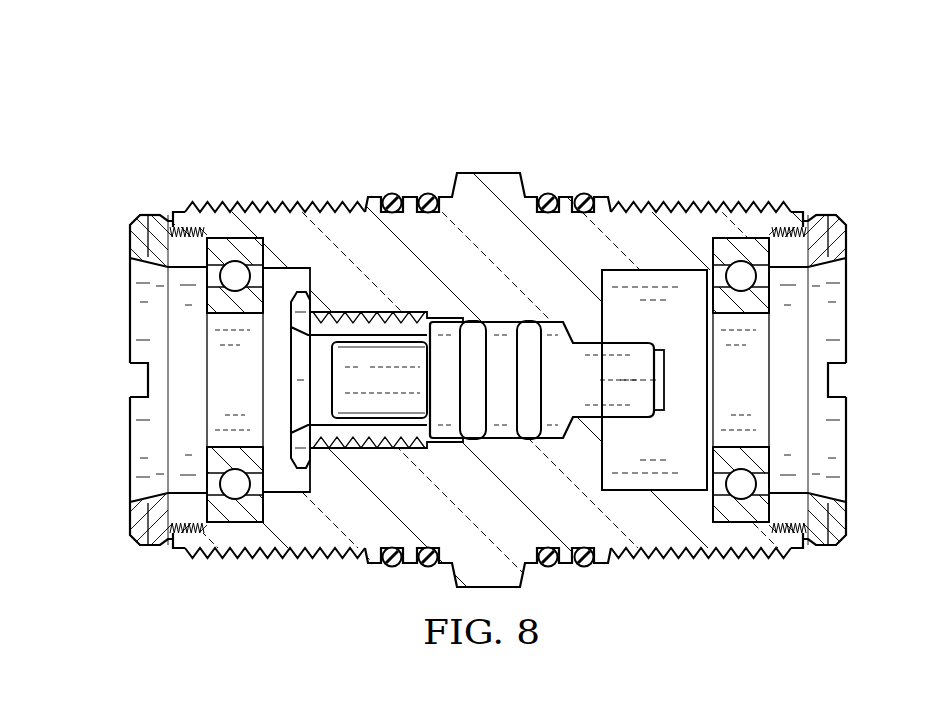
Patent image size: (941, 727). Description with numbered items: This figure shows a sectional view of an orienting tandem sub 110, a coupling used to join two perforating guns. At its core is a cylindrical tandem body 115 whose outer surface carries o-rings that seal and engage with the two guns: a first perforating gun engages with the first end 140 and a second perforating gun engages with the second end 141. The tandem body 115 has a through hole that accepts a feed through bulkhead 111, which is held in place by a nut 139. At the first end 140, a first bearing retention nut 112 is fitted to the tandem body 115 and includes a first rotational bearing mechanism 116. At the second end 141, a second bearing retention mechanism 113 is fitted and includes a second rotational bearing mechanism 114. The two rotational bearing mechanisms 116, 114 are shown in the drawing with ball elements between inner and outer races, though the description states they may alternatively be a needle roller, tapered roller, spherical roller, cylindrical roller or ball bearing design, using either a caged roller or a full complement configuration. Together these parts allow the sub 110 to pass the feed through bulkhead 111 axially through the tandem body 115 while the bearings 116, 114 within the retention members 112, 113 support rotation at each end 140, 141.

The orienting tandem sub 110 is at (617, 107).
The feed through bulkhead 111 is at (497, 447).
The first bearing retention nut 112 is at (840, 238).
The second bearing retention mechanism 113 is at (137, 240).
The second rotational bearing mechanism 114 is at (217, 307).
The tandem body 115 is at (303, 228).
The first rotational bearing mechanism 116 is at (760, 303).
The nut 139 is at (287, 375).
The first end 140 is at (829, 202).
The second end 141 is at (148, 202).